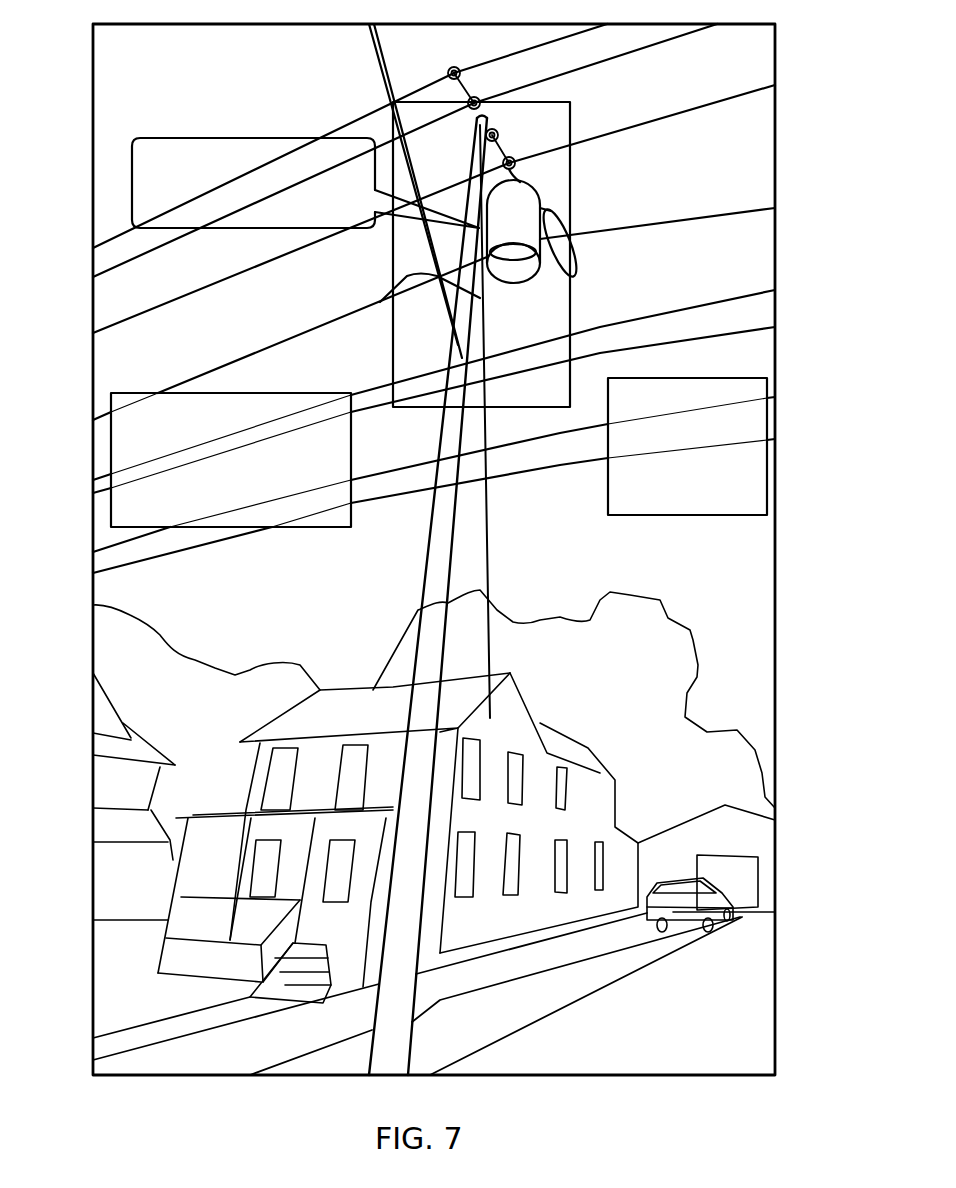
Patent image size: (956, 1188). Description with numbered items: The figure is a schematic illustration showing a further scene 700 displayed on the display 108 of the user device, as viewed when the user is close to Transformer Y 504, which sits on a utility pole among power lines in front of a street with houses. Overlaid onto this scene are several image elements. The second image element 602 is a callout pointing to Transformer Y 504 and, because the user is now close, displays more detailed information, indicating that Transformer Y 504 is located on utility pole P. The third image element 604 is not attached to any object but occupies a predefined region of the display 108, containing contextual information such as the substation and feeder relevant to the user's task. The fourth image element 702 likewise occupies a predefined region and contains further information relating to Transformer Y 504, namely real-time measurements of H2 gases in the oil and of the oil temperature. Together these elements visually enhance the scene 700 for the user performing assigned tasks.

The display 108 is at (775, 147).
The further scene 700 is at (747, 255).
The transformer 504 is at (570, 197).
The second image element 602 is at (132, 186).
The third image element 604 is at (111, 448).
The fourth image element 702 is at (767, 478).